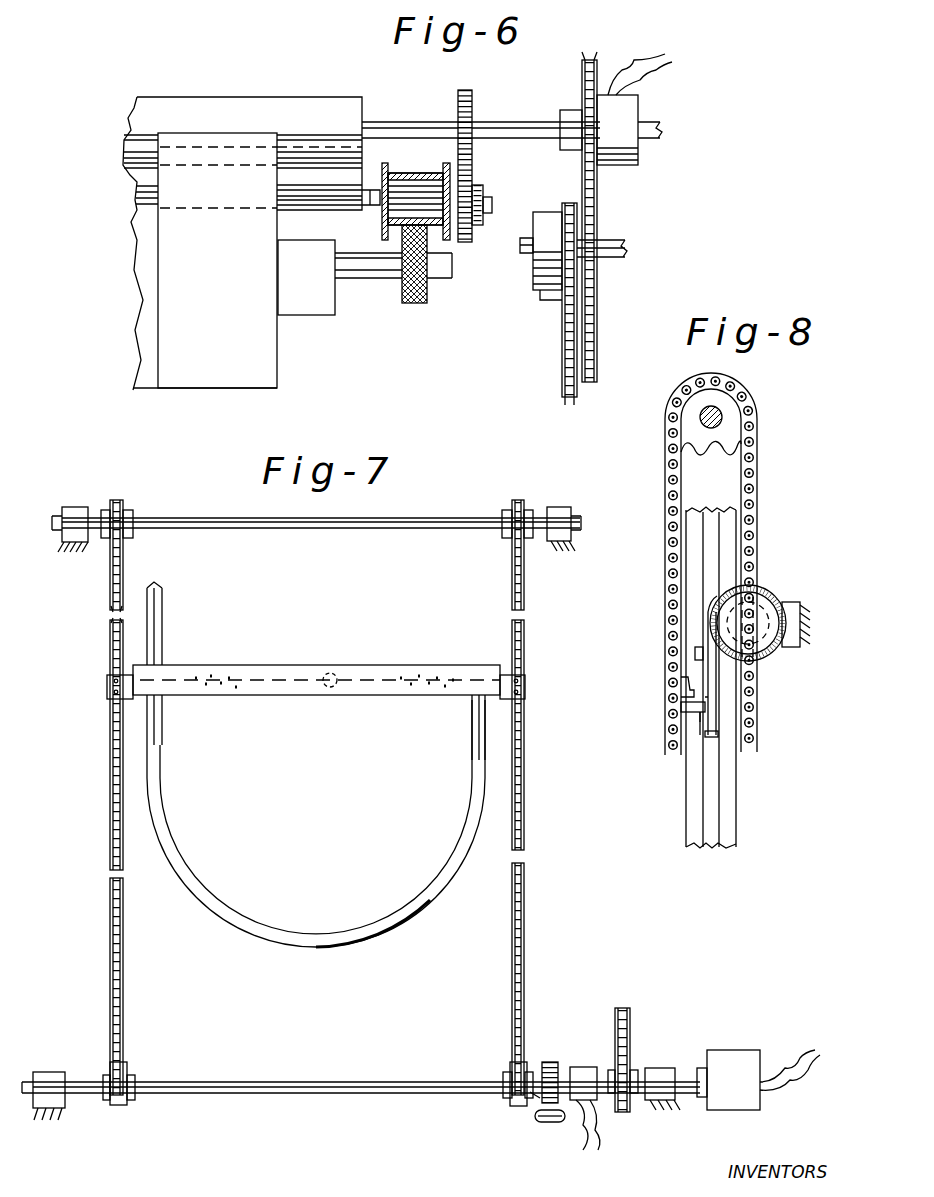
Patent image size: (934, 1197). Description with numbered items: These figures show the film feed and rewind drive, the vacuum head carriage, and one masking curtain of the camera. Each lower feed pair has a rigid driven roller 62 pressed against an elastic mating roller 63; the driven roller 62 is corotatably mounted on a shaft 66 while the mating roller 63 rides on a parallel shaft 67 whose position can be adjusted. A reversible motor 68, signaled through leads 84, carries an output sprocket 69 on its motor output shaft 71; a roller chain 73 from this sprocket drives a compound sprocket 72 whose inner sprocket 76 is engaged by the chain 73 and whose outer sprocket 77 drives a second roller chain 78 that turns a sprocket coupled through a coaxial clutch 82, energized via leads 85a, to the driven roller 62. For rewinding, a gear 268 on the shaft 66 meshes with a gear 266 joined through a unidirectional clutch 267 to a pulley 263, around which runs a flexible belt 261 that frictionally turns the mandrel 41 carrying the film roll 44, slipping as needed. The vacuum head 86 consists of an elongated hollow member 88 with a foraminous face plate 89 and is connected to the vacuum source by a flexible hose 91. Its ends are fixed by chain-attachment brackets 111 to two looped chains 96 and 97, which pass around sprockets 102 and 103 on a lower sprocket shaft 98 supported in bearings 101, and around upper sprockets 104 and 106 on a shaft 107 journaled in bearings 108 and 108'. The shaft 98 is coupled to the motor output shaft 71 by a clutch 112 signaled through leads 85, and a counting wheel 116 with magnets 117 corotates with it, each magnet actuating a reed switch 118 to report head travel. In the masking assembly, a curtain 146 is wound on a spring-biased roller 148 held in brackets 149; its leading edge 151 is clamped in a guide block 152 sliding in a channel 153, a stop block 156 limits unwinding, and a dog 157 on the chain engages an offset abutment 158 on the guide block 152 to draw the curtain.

In FIG. 6, the driven roller 62 is at (268, 90).
In FIG. 6, the roll 44 is at (240, 380).
In FIG. 6, the mating roller 63 is at (138, 203).
In FIG. 6, the shaft 66 is at (527, 132).
In FIG. 6, the gear 268 is at (458, 102).
In FIG. 6, the flexible belt 261 is at (408, 176).
In FIG. 6, the pulley 263 is at (408, 208).
In FIG. 6, the mandrel 41 is at (310, 300).
In FIG. 6, the parallel shaft 67 is at (364, 208).
In FIG. 6, the gear 266 is at (468, 205).
In FIG. 6, the unidirectional clutch 267 is at (478, 226).
In FIG. 6, the second roller chain 78 is at (597, 190).
In FIG. 6, the coaxial clutch 82 is at (620, 128).
In FIG. 6, the leads 85a is at (661, 71).
In FIG. 6, the outer sprocket 77 is at (597, 272).
In FIG. 6, the compound sprocket 72 is at (548, 268).
In FIG. 6, the inner sprocket 76 is at (556, 296).
In FIG. 6, the roller chain 73 is at (561, 375).
In FIG. 7, the shaft 107 is at (322, 528).
In FIG. 8, the shaft 107 is at (722, 418).
In FIG. 7, the sprocket 104 is at (125, 500).
In FIG. 8, the sprocket 104 is at (690, 435).
In FIG. 7, the bearing 108' is at (47, 546).
In FIG. 7, the sprocket 106 is at (514, 502).
In FIG. 7, the bearing 108 is at (581, 546).
In FIG. 7, the looped chain 96 is at (110, 885).
In FIG. 8, the looped chain 96 is at (757, 440).
In FIG. 7, the looped chain 97 is at (512, 890).
In FIG. 7, the elongated hollow member 88 is at (305, 665).
In FIG. 7, the chain-attachment bracket 111 is at (130, 688).
In FIG. 7, the vacuum head 86 is at (268, 698).
In FIG. 7, the foraminous face plate 89 is at (420, 698).
In FIG. 7, the flexible hose 91 is at (478, 760).
In FIG. 7, the lower sprocket shaft 98 is at (330, 1082).
In FIG. 7, the sprocket 102 is at (125, 1100).
In FIG. 7, the bearing 101 is at (55, 1095).
In FIG. 7, the sprocket 103 is at (514, 1100).
In FIG. 7, the counting wheel 116 is at (548, 1070).
In FIG. 7, the clutch 112 is at (585, 1075).
In FIG. 7, the output sprocket 69 is at (630, 1060).
In FIG. 7, the motor output shaft 71 is at (694, 1090).
In FIG. 7, the reversible motor 68 is at (722, 1055).
In FIG. 7, the leads 84 is at (795, 1053).
In FIG. 7, the magnet 117 is at (540, 1098).
In FIG. 7, the reed switch 118 is at (545, 1122).
In FIG. 7, the leads 85 is at (595, 1139).
In FIG. 8, the channel 153 is at (710, 808).
In FIG. 8, the spring-biased roller 148 is at (770, 648).
In FIG. 8, the bracket 149 is at (790, 602).
In FIG. 8, the masking curtain 146 is at (712, 684).
In FIG. 8, the stop block 156 is at (693, 653).
In FIG. 8, the dog 157 is at (686, 682).
In FIG. 8, the offset abutment 158 is at (696, 712).
In FIG. 8, the guide block 152 is at (718, 733).
In FIG. 8, the leading edge 151 is at (700, 722).